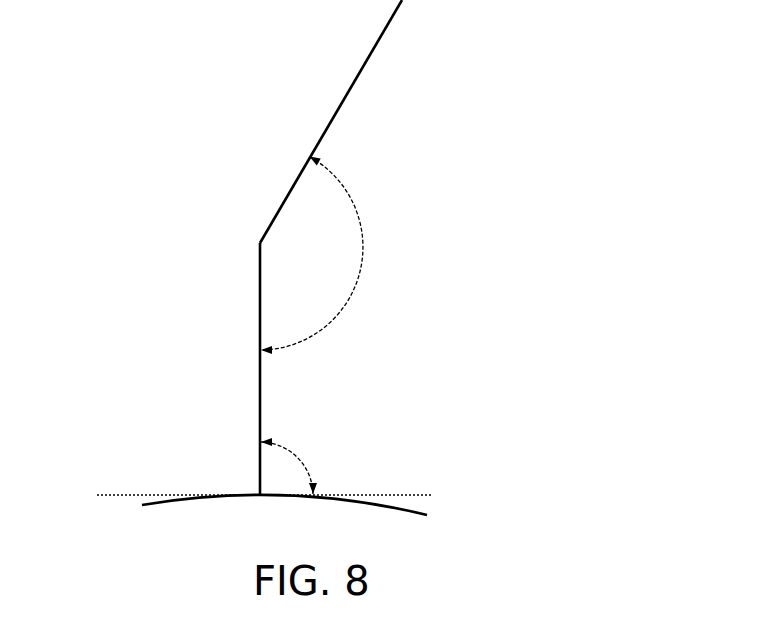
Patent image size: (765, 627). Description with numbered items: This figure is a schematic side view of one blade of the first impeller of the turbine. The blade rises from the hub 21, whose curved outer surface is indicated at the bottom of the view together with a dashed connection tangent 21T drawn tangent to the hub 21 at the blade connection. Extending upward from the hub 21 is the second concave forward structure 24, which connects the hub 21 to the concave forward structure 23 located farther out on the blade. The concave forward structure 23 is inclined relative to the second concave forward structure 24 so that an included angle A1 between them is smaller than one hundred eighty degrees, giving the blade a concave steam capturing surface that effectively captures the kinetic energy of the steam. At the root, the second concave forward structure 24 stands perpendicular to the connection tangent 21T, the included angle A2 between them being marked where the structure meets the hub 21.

The hub 21 is at (370, 505).
The connection tangent 21T is at (153, 495).
The concave forward structure 23 is at (318, 140).
The second concave forward structure 24 is at (260, 370).
The included angle A1 is at (331, 256).
The included angle A2 is at (301, 466).